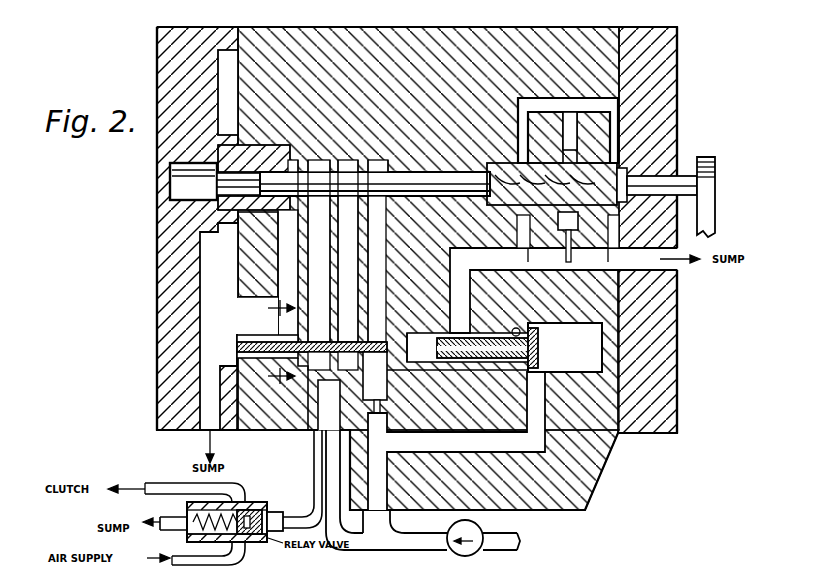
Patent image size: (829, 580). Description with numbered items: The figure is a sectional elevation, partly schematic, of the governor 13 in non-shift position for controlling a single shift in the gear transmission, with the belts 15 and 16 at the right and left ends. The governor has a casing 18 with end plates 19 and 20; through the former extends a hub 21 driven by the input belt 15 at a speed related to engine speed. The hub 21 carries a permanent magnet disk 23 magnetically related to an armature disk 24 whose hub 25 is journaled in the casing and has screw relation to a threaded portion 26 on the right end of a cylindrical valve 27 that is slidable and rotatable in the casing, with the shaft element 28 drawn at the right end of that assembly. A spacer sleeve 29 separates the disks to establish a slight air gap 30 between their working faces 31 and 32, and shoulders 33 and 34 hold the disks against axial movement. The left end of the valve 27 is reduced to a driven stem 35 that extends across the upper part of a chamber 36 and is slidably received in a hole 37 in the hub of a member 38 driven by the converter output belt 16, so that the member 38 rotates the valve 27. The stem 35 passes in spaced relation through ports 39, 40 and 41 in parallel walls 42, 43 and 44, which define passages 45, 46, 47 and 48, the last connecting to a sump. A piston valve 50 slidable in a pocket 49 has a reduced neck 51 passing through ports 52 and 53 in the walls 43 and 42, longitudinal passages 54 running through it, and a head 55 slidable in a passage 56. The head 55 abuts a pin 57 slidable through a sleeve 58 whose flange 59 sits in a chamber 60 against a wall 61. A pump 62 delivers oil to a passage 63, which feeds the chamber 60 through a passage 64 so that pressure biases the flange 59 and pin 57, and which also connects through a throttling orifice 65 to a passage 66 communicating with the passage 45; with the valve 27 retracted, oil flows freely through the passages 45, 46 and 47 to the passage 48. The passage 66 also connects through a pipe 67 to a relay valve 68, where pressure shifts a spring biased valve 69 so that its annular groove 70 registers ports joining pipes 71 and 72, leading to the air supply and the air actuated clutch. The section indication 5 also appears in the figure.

The section line 5 is at (281, 341).
The governor 13 is at (690, 40).
The input belt 15 is at (713, 210).
The converter output belt 16 is at (218, 231).
The casing 18 is at (536, 29).
The end plate 19 is at (678, 70).
The end plate 20 is at (157, 57).
The hub 21 is at (678, 146).
The permanent magnet disk 23 is at (527, 98).
The armature disk 24 is at (529, 118).
The hub 25 is at (500, 161).
The threaded portion 26 is at (500, 205).
The cylindrical valve 27 is at (375, 182).
The control shaft 28 is at (662, 185).
The spacer sleeve 29 is at (567, 136).
The air gap 30 is at (560, 111).
The working face 31 is at (593, 137).
The working face 32 is at (545, 137).
The shoulder 33 is at (635, 171).
The shoulder 34 is at (545, 220).
The driven stem 35 is at (350, 160).
The chamber 36 is at (386, 160).
The hole 37 is at (215, 181).
The member 38 is at (265, 160).
The port 39 is at (364, 160).
The port 40 is at (333, 160).
The port 41 is at (296, 160).
The wall 42 is at (366, 222).
The wall 43 is at (334, 240).
The wall 44 is at (306, 259).
The passage 45 is at (376, 269).
The passage 46 is at (348, 269).
The passage 47 is at (319, 269).
The passage 48 is at (287, 276).
The pocket 49 is at (290, 372).
The piston valve 50 is at (262, 353).
The reduced neck 51 is at (416, 363).
The port 52 is at (331, 341).
The port 53 is at (361, 341).
The longitudinal passages 54 is at (263, 334).
The head 55 is at (409, 338).
The passage 56 is at (446, 362).
The pin 57 is at (457, 393).
The sleeve 58 is at (460, 340).
The flange 59 is at (539, 333).
The chamber 60 is at (565, 347).
The wall 61 is at (518, 328).
The pump 62 is at (475, 554).
The passage 63 is at (454, 452).
The passage 64 is at (466, 442).
The throttling orifice 65 is at (377, 412).
The passage 66 is at (382, 465).
The pipe 67 is at (313, 452).
The relay valve 68 is at (250, 500).
The spring biased valve 69 is at (258, 540).
The annular groove 70 is at (249, 543).
The pipe 71 is at (236, 547).
The pipe 72 is at (236, 501).